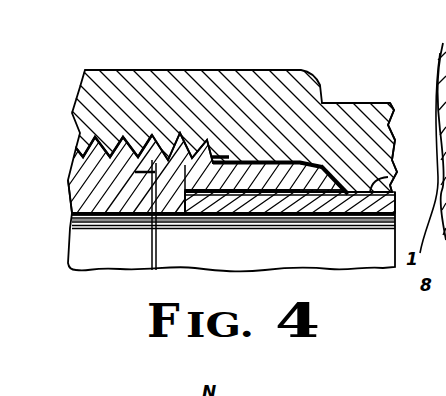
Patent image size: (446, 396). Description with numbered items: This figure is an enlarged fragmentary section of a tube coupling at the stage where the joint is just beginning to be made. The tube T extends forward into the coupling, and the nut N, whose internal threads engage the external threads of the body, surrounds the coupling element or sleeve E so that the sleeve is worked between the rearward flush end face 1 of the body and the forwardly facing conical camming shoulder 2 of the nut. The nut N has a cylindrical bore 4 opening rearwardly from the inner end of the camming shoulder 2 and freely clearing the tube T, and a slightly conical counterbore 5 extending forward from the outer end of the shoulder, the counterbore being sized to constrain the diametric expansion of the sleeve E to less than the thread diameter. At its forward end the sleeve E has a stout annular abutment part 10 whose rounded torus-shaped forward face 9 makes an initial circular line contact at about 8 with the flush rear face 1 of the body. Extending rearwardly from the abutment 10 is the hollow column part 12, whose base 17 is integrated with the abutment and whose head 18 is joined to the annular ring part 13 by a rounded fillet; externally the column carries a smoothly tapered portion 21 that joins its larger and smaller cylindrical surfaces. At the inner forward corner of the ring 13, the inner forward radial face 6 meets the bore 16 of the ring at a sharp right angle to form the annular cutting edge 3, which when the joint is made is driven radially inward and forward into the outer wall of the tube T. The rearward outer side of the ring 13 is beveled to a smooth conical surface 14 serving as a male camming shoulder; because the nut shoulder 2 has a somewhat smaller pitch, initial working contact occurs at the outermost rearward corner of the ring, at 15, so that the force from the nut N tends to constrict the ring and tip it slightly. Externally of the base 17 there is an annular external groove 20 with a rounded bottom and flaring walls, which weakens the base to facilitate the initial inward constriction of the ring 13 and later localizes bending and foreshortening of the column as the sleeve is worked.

The nut N is at (107, 70).
The rearward flush end face 1 is at (153, 177).
The camming shoulder 2 is at (346, 193).
The annular cutting edge 3 is at (277, 192).
The cylindrical bore 4 is at (388, 177).
The counterbore 5 is at (340, 193).
The inner forward radial face 6 is at (238, 195).
The initial circular line contact 8 is at (152, 163).
The torus-shaped forward face 9 is at (188, 172).
The annular abutment part 10 is at (158, 168).
The hollow column part 12 is at (180, 195).
The annular ring part 13 is at (346, 192).
The conical surface 14 is at (310, 197).
The point of initial working contact 15 is at (334, 192).
The bore of the ring 16 is at (303, 217).
The base of the column 17 is at (152, 270).
The head of the column 18 is at (233, 190).
The annular external groove 20 is at (208, 162).
The tapered portion 21 is at (250, 160).
The coupling element or sleeve E is at (240, 222).
The tube T is at (235, 231).